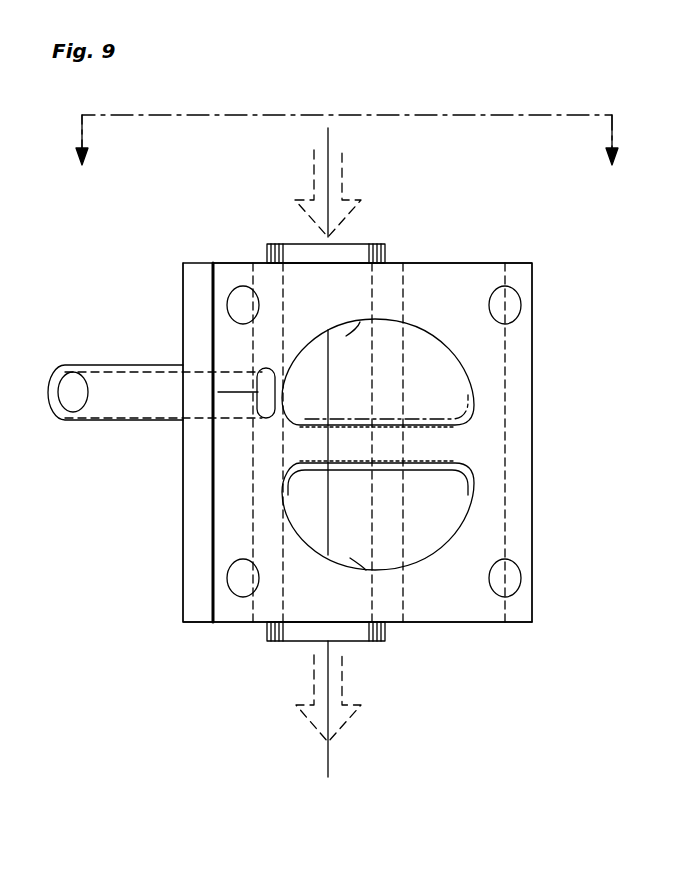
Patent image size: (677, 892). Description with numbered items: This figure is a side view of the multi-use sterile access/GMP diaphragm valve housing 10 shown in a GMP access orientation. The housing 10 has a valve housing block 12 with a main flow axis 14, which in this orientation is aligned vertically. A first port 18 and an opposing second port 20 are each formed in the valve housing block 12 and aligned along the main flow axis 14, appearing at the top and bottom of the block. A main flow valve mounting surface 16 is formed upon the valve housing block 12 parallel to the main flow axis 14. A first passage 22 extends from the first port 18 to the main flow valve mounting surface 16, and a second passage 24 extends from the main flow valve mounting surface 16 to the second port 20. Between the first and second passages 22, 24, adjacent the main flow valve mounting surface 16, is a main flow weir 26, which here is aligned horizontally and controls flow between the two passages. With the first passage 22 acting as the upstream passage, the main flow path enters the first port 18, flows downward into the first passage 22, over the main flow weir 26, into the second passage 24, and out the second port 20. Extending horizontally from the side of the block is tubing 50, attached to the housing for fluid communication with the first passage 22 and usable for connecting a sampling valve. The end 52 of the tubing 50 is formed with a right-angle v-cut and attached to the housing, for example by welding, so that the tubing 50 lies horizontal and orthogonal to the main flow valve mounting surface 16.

The multi-use sterile access/GMP diaphragm valve housing 10 is at (156, 252).
The valve housing block 12 is at (233, 263).
The main flow axis 14 is at (322, 131).
The main flow valve mounting surface 16 is at (477, 272).
The first port 18 is at (368, 242).
The second port 20 is at (373, 644).
The first passage 22 is at (418, 372).
The second passage 24 is at (405, 510).
The main flow weir 26 is at (422, 446).
The tubing 50 is at (104, 364).
The end of the tubing 52 is at (273, 415).